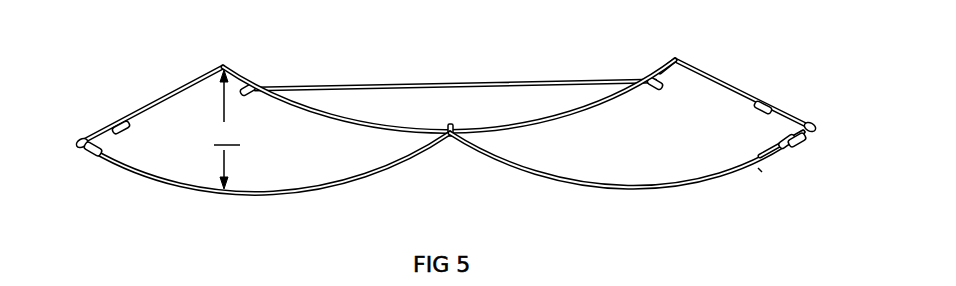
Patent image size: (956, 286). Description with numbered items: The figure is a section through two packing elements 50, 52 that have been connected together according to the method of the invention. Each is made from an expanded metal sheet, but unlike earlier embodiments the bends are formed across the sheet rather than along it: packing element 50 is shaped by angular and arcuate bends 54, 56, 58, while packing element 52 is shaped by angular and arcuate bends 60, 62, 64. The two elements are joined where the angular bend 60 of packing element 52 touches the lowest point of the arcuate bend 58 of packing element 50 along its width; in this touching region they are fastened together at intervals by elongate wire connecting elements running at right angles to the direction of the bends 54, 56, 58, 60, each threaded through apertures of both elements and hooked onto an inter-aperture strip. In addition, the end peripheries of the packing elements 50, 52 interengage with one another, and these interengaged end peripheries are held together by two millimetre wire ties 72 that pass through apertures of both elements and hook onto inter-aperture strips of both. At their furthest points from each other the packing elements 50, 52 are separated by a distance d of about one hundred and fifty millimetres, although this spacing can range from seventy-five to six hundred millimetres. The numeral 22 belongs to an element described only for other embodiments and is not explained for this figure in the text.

The top rail tube 22 is at (530, 81).
The packing element 50 is at (738, 82).
The packing element 52 is at (750, 173).
The angular bend 54 is at (263, 27).
The angular bend 56 is at (697, 22).
The arcuate bend 58 is at (415, 122).
The angular bend 60 is at (440, 135).
The arcuate bend 62 is at (232, 198).
The arcuate bend 64 is at (705, 185).
The wire ties 72 is at (84, 140).
The distance d is at (227, 129).